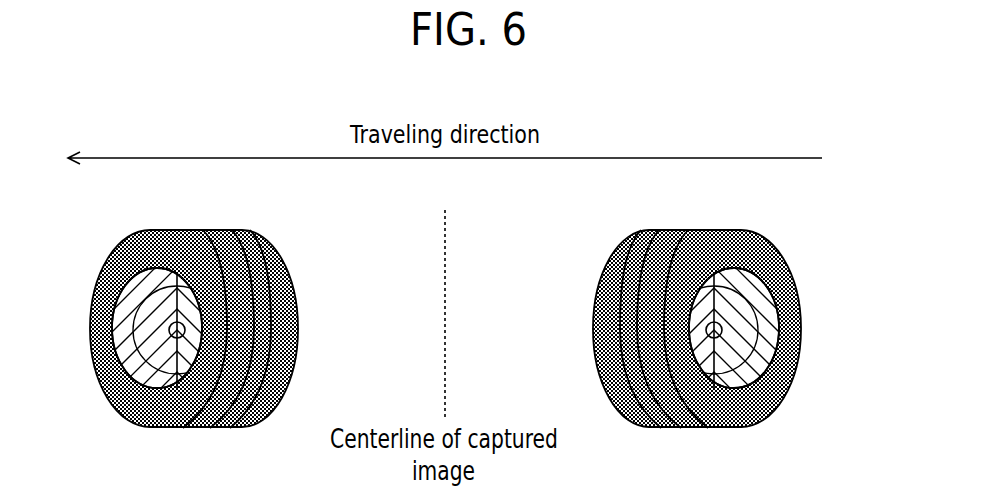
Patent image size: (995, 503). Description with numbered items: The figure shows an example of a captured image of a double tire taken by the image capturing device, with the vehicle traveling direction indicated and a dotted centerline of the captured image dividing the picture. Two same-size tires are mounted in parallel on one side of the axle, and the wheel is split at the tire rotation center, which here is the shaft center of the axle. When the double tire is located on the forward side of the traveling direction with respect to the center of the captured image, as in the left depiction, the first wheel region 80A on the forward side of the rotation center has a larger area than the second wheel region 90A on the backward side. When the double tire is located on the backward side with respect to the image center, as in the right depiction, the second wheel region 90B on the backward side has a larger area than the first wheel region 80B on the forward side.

The first wheel region 80A is at (137, 282).
The first wheel region 80B is at (683, 268).
The second wheel region 90A is at (183, 285).
The second wheel region 90B is at (740, 270).